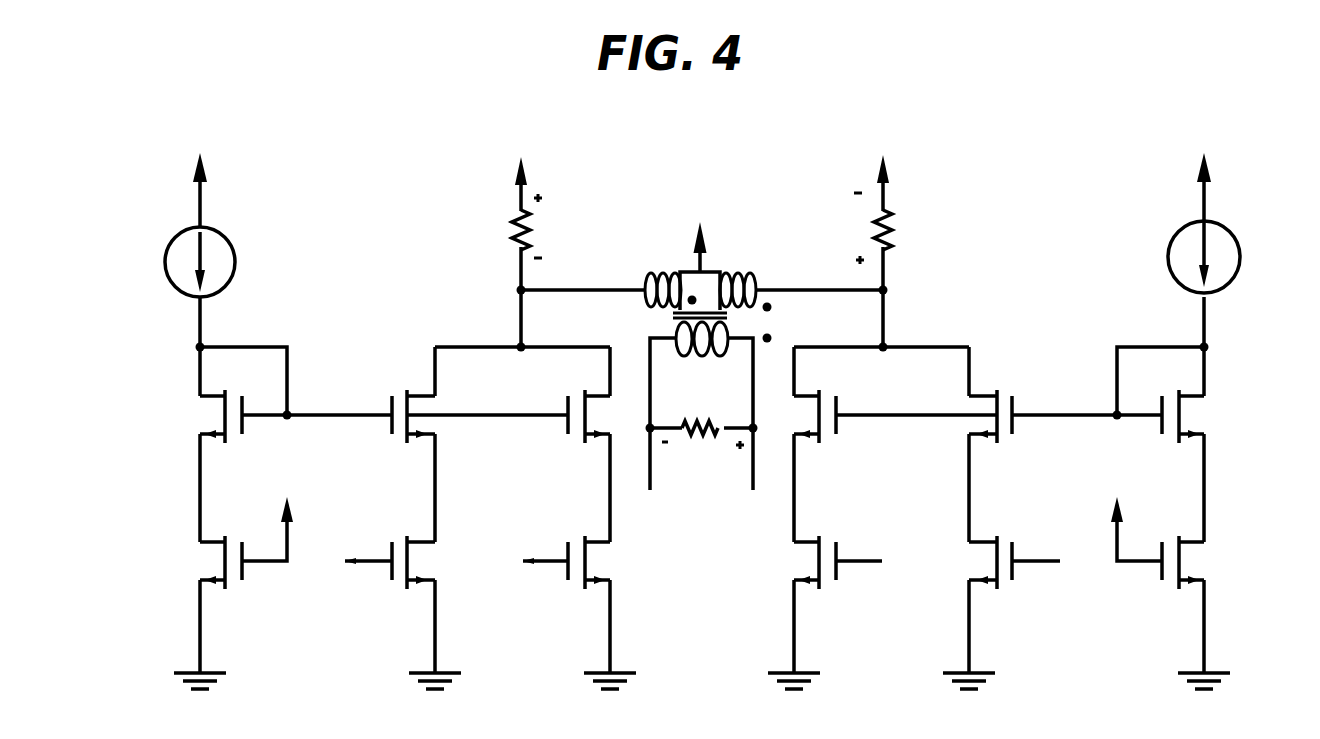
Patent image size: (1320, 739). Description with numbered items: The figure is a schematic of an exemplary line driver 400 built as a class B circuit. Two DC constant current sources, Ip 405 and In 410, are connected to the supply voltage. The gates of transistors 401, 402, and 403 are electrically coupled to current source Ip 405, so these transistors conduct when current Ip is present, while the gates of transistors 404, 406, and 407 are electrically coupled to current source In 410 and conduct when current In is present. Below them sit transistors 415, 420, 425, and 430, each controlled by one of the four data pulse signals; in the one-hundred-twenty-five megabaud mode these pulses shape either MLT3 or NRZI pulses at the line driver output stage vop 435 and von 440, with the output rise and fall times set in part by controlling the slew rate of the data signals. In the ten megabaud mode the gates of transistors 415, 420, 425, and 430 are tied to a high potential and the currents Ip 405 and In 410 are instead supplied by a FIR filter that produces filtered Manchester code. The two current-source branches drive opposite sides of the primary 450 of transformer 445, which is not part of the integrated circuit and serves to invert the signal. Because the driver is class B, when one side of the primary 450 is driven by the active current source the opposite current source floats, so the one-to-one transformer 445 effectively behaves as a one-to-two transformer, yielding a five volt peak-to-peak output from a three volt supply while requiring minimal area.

The line driver 400 is at (990, 117).
The transistor 401 is at (203, 413).
The transistor 402 is at (395, 393).
The transistor 403 is at (575, 436).
The transistor 404 is at (822, 436).
The current source Ip 405 is at (160, 262).
The transistor 406 is at (1008, 395).
The transistor 407 is at (1220, 410).
The current source In 410 is at (1232, 227).
The transistor 415 is at (395, 540).
The transistor 420 is at (824, 583).
The transistor 425 is at (1008, 547).
The transistor 430 is at (572, 583).
The line driver output stage vop 435 is at (750, 543).
The line driver output stage von 440 is at (657, 543).
The transformer 445 is at (668, 320).
The primary 450 is at (688, 235).